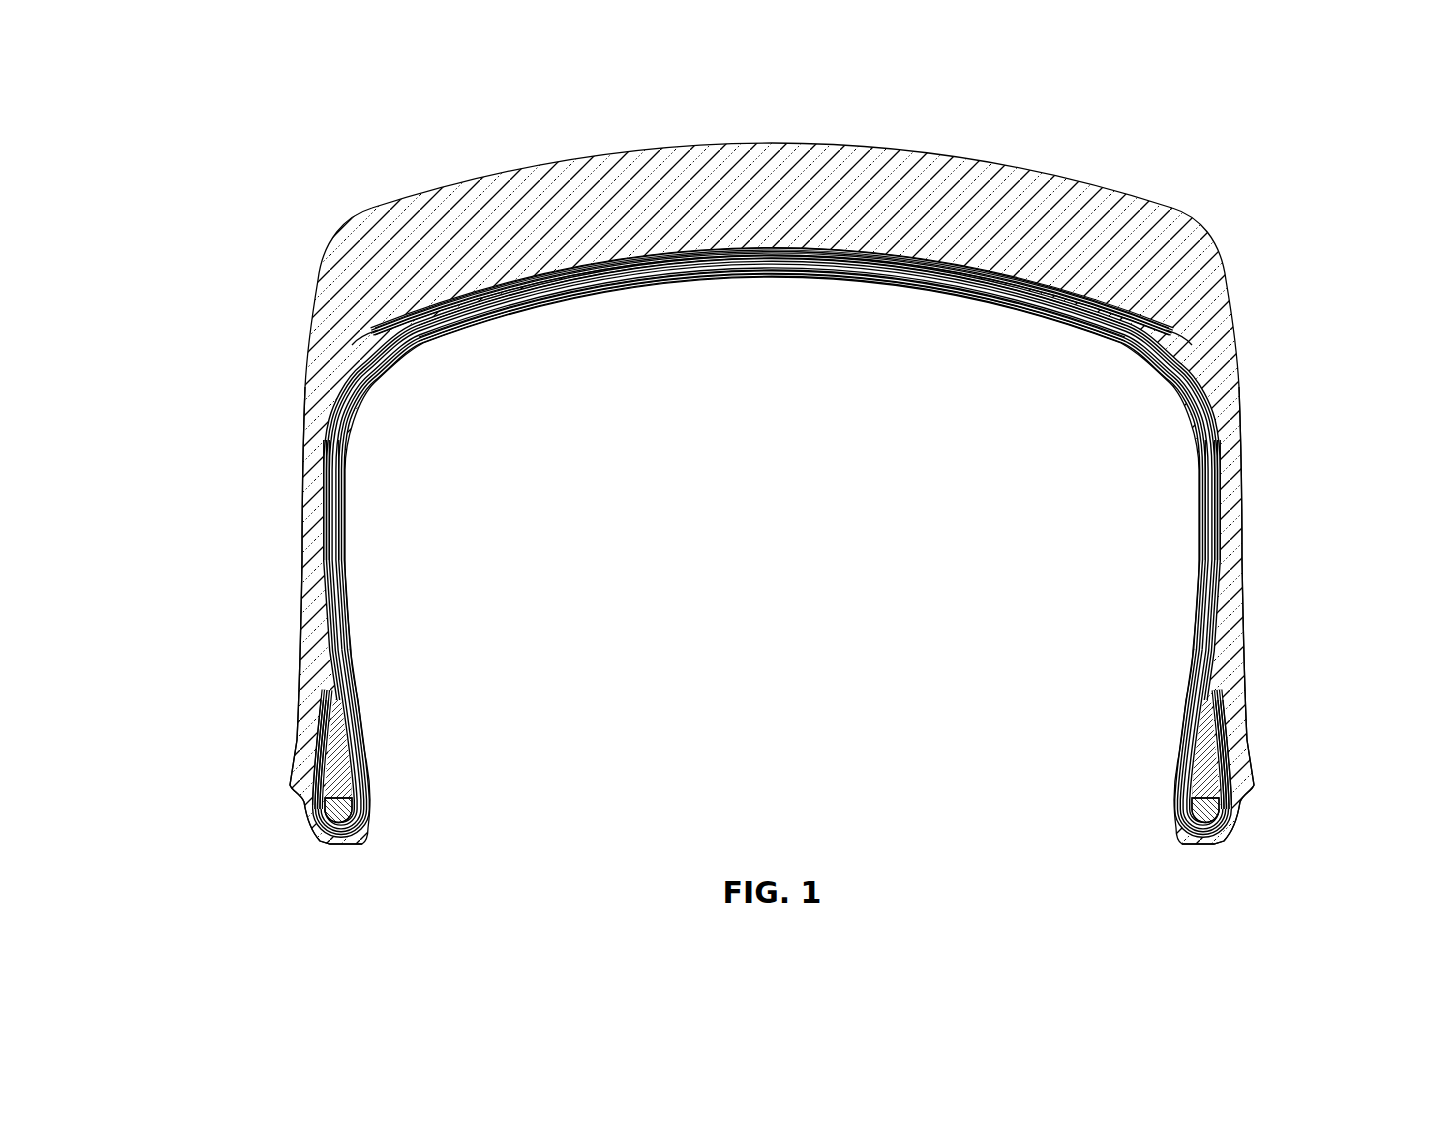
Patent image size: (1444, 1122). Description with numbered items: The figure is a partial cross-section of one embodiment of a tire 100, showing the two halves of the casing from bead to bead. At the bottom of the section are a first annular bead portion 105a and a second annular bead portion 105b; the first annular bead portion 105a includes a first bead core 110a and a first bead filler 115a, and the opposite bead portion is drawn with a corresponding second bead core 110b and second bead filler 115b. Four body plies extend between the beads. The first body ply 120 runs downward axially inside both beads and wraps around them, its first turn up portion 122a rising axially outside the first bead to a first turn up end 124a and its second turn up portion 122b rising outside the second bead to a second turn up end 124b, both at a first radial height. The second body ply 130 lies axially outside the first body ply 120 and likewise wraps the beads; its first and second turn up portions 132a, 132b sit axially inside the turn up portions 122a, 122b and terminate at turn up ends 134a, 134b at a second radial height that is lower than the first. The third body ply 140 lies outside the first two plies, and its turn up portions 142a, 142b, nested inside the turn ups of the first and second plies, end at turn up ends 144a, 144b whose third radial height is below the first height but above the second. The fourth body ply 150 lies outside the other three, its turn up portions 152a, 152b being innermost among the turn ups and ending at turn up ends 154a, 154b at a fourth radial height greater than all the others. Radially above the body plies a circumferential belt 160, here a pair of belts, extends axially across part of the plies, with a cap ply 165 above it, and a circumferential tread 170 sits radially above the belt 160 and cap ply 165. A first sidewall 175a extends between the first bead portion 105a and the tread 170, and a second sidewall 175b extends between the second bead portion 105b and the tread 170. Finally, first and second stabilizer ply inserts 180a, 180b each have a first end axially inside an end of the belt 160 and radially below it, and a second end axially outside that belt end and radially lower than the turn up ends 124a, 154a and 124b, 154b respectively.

The tire 100 is at (274, 86).
The first annular bead portion 105a is at (1348, 673).
The second annular bead portion 105b is at (187, 675).
The first bead core 110a is at (1187, 817).
The second bead core 110b is at (347, 813).
The first bead filler 115a is at (1193, 765).
The second bead filler 115b is at (345, 767).
The first body ply 120 is at (789, 279).
The first turn up portion of the first body ply 122a is at (1235, 528).
The second turn up portion of the first body ply 122b is at (323, 537).
The first turn up end of the first body ply 124a is at (1233, 473).
The second turn up end of the first body ply 124b is at (323, 483).
The second body ply 130 is at (856, 278).
The first turn up portion of the second body ply 132a is at (1230, 758).
The second turn up portion of the second body ply 132b is at (320, 767).
The first turn up end of the second body ply 134a is at (1212, 717).
The second turn up end of the second body ply 134b is at (330, 717).
The third body ply 140 is at (929, 262).
The first turn up portion of the third body ply 142a is at (1208, 698).
The second turn up portion of the third body ply 142b is at (332, 697).
The first turn up end of the third body ply 144a is at (1232, 665).
The second turn up end of the third body ply 144b is at (323, 683).
The fourth body ply 150 is at (983, 275).
The first turn up portion of the fourth body ply 152a is at (1237, 445).
The second turn up portion of the fourth body ply 152b is at (320, 447).
The first turn up end of the fourth body ply 154a is at (1238, 403).
The second turn up end of the fourth body ply 154b is at (308, 413).
The circumferential belt 160 is at (636, 262).
The cap ply 165 is at (697, 257).
The circumferential tread 170 is at (755, 160).
The first sidewall 175a is at (1233, 592).
The second sidewall 175b is at (312, 593).
The first stabilizer ply insert 180a is at (1170, 348).
The second stabilizer ply insert 180b is at (362, 347).